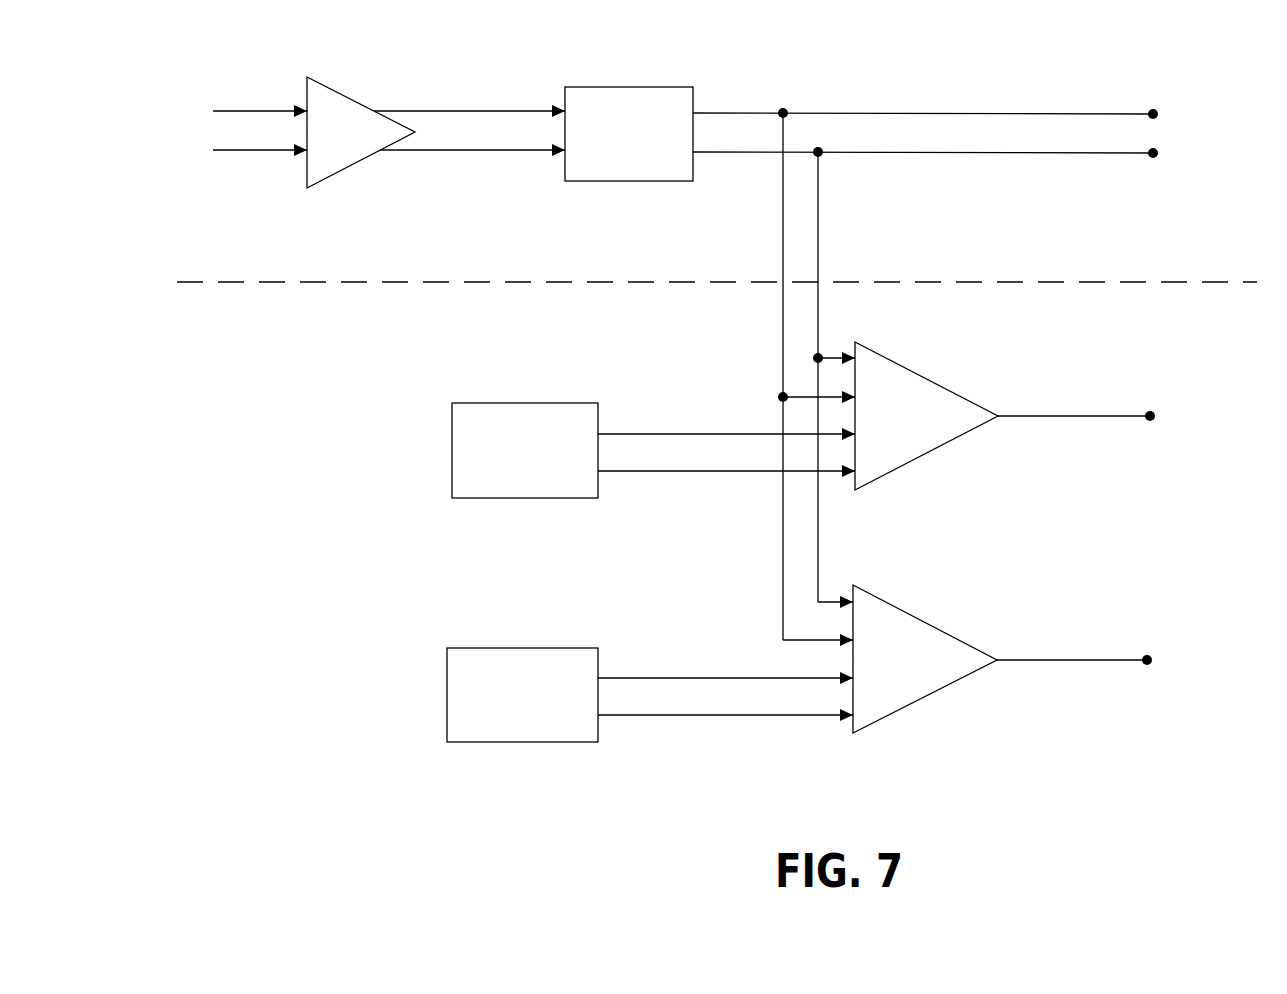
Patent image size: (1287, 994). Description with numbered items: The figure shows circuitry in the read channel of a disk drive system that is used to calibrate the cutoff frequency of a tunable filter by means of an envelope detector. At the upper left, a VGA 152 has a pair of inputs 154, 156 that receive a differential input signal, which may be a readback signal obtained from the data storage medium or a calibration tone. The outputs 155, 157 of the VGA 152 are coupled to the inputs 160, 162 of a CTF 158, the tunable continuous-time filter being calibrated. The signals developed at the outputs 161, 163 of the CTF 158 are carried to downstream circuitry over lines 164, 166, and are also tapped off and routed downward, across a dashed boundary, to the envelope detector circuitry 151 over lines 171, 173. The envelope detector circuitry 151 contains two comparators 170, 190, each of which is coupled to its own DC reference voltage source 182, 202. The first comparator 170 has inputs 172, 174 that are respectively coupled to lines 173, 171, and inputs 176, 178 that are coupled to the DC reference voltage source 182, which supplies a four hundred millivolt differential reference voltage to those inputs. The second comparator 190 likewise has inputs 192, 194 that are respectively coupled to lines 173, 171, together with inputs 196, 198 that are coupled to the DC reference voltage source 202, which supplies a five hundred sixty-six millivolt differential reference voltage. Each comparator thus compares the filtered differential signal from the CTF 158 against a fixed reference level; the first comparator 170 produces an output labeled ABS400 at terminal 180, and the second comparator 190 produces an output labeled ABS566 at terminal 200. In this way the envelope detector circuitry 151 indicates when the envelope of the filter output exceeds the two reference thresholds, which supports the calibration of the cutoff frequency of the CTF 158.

The envelope detector circuitry 151 is at (275, 343).
The VGA 152 is at (338, 90).
The input 154 is at (281, 108).
The output 155 is at (405, 109).
The input 156 is at (282, 153).
The output 157 is at (418, 153).
The CTF 158 is at (625, 87).
The input 160 is at (530, 108).
The output 161 is at (710, 113).
The input 162 is at (530, 153).
The output 163 is at (705, 152).
The line 164 is at (1122, 114).
The line 166 is at (1128, 156).
The comparator 170 is at (913, 362).
The line 171 is at (780, 195).
The input 172 is at (833, 357).
The line 173 is at (820, 190).
The input 174 is at (833, 394).
The input 176 is at (840, 433).
The input 178 is at (825, 475).
The CMP1 output ABS400 180 is at (1135, 414).
The DC reference voltage source 182 is at (490, 499).
The comparator 190 is at (940, 627).
The input 192 is at (828, 600).
The input 194 is at (835, 638).
The input 196 is at (835, 677).
The input 198 is at (835, 720).
The CMP2 output ABS566 200 is at (1133, 655).
The DC reference voltage source 202 is at (510, 742).